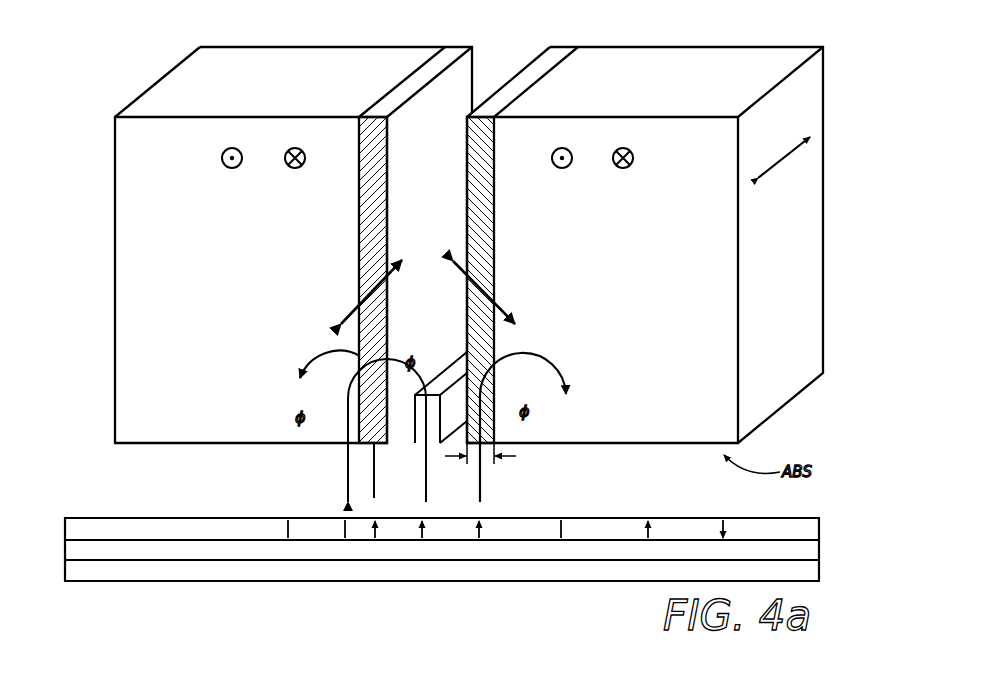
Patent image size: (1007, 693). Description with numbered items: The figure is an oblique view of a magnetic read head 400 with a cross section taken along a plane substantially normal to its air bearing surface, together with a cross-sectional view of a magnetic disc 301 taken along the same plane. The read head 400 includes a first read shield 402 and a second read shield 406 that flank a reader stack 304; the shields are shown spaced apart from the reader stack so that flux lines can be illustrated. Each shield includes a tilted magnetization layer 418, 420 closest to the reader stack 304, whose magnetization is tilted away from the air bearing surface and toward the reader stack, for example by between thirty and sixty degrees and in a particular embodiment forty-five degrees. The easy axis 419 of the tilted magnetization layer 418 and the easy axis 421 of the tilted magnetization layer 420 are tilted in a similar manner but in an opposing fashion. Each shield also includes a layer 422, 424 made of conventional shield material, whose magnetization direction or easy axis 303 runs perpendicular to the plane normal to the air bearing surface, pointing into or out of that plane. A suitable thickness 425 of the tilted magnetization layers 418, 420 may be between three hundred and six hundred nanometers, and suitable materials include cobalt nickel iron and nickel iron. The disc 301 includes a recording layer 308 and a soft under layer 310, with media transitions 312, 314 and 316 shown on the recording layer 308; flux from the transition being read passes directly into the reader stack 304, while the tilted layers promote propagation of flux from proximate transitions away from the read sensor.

The magnetic read head 400 is at (788, 104).
The first read shield 402 is at (387, 110).
The second read shield 406 is at (738, 110).
The tilted magnetization layer 418 is at (372, 152).
The tilted magnetization layer 420 is at (480, 140).
The first read shield layer 422 is at (263, 215).
The second read shield layer 424 is at (592, 215).
The easy axis 419 is at (358, 322).
The easy axis 421 is at (518, 320).
The easy axis 303 is at (800, 150).
The reader stack 304 is at (435, 395).
The thickness 425 is at (488, 466).
The recording layer 308 is at (80, 524).
The soft under layer 310 is at (80, 574).
The magnetic disc 301 is at (162, 589).
The media transition 314 is at (373, 525).
The media transition 312 is at (419, 526).
The media transition 316 is at (480, 526).